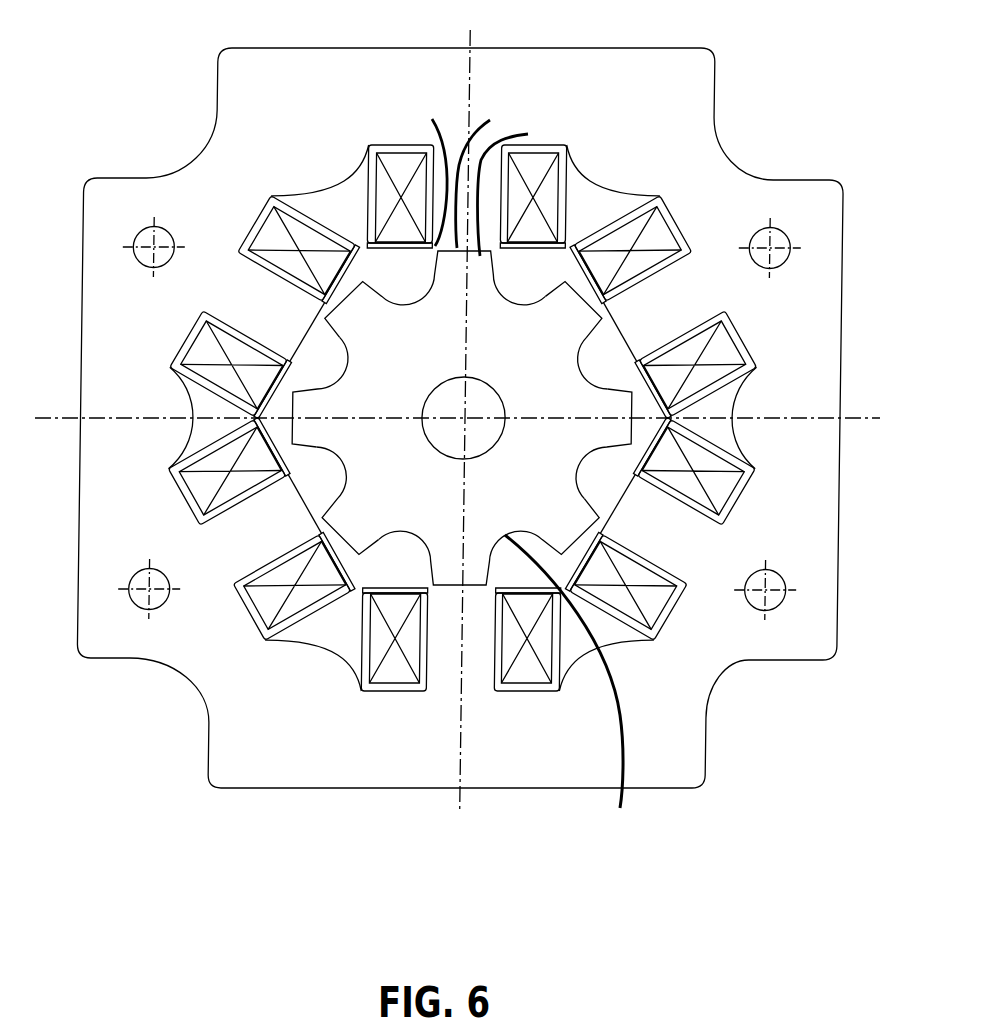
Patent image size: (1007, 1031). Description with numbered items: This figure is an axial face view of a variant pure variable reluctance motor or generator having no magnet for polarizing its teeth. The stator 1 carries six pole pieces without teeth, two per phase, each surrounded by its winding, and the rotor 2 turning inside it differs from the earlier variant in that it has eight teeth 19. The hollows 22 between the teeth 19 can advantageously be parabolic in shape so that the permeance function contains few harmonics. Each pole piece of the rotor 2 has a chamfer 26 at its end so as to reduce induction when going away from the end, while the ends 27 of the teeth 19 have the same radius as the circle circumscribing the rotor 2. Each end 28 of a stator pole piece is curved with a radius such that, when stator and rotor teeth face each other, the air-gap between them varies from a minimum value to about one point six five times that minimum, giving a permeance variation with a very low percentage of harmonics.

The stator 1 is at (677, 95).
The rotor 2 is at (555, 445).
The teeth 19 is at (620, 410).
The hollows 22 is at (576, 696).
The chamfer 26 is at (430, 170).
The ends of the teeth 27 is at (520, 186).
The end of the pole piece 28 is at (487, 169).